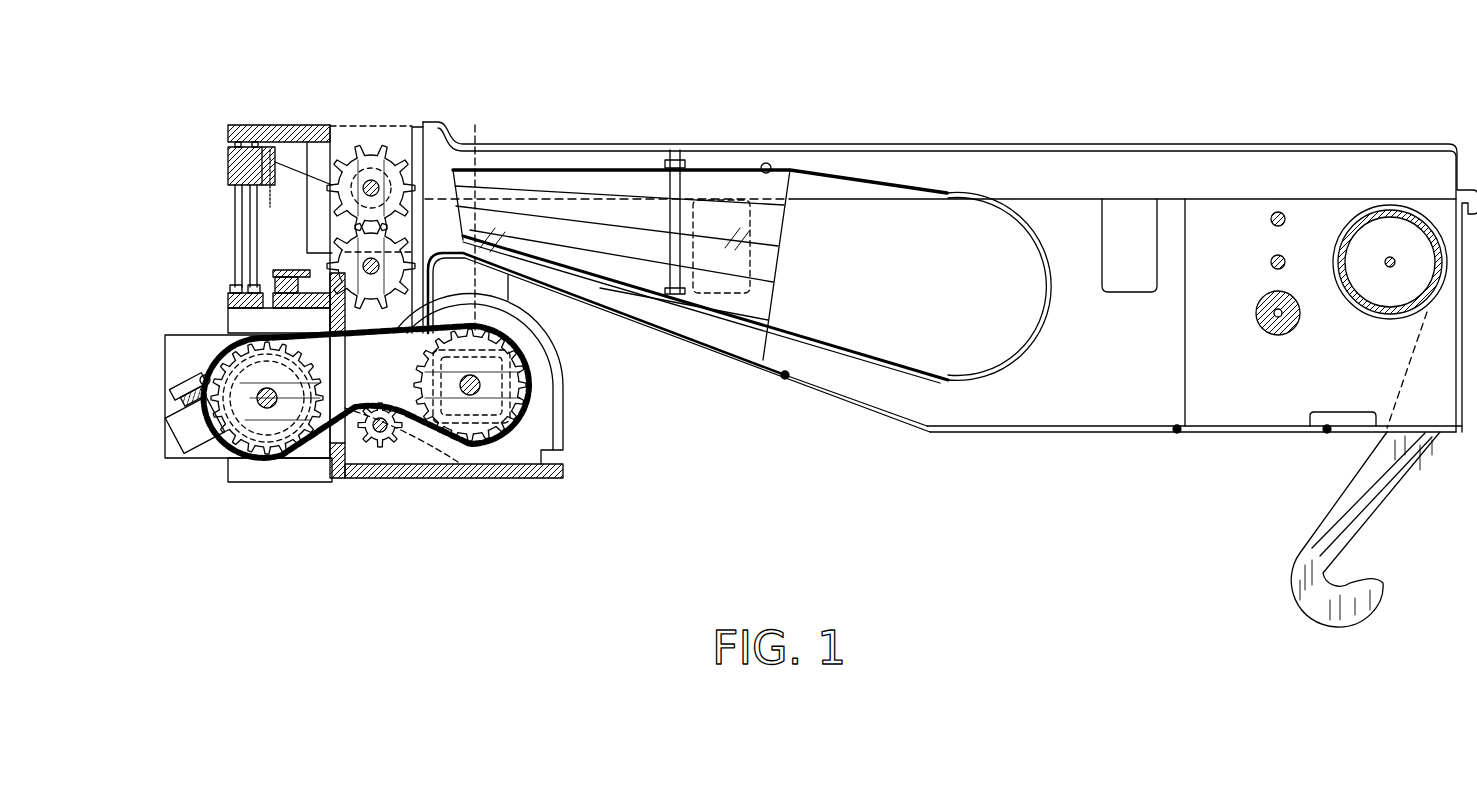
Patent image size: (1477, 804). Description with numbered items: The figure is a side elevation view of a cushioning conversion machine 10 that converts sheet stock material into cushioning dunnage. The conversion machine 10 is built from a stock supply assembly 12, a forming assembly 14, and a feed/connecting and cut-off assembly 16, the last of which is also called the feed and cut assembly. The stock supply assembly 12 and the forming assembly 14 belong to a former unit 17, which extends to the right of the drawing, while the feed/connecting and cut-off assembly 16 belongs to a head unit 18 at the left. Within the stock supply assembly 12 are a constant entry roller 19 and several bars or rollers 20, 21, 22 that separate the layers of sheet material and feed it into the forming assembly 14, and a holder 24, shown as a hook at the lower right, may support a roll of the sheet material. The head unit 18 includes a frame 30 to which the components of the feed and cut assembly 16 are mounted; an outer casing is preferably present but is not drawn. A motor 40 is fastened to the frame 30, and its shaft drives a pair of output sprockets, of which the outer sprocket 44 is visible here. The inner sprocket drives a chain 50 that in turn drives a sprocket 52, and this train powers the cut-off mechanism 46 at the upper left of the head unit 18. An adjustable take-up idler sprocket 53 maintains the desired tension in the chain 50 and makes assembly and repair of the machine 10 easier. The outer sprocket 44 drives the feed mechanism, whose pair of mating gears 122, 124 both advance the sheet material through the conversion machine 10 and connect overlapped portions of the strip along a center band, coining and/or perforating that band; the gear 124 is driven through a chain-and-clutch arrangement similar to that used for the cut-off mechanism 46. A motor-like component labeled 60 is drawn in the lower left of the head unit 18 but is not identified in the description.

The cushioning conversion machine 10 is at (769, 90).
The stock supply assembly 12 is at (1316, 180).
The forming assembly 14 is at (912, 168).
The feed/connecting and cut-off assembly 16 is at (362, 114).
The former unit 17 is at (1134, 138).
The head unit 18 is at (283, 104).
The constant entry roller 19 is at (1382, 316).
The bar or roller 20 is at (1262, 332).
The bar or roller 21 is at (1270, 265).
The bar or roller 22 is at (1270, 220).
The holder 24 is at (1318, 527).
The frame 30 is at (530, 467).
The motor 40 is at (556, 349).
The outer sprocket 44 is at (494, 393).
The cut-off mechanism 46 is at (212, 182).
The chain 50 is at (318, 428).
The sprocket 52 is at (256, 412).
The adjustable take-up idler sprocket 53 is at (364, 438).
The motor 60 is at (197, 440).
The gear 122 is at (337, 237).
The gear 124 is at (333, 200).